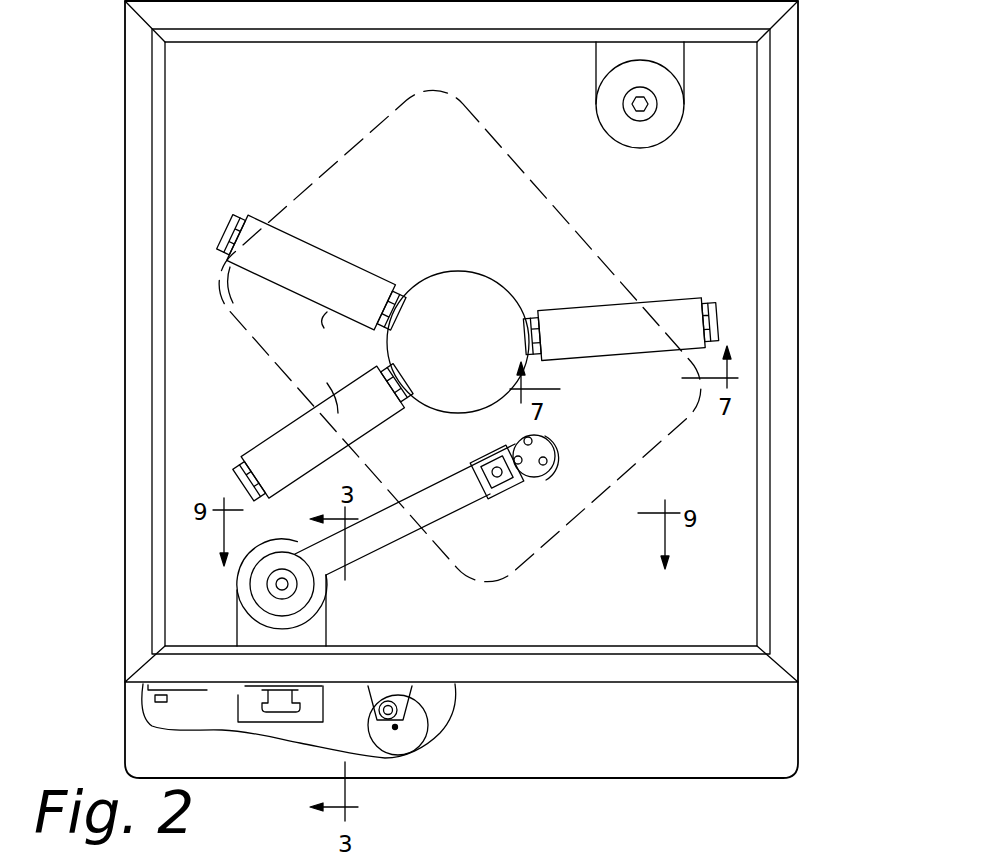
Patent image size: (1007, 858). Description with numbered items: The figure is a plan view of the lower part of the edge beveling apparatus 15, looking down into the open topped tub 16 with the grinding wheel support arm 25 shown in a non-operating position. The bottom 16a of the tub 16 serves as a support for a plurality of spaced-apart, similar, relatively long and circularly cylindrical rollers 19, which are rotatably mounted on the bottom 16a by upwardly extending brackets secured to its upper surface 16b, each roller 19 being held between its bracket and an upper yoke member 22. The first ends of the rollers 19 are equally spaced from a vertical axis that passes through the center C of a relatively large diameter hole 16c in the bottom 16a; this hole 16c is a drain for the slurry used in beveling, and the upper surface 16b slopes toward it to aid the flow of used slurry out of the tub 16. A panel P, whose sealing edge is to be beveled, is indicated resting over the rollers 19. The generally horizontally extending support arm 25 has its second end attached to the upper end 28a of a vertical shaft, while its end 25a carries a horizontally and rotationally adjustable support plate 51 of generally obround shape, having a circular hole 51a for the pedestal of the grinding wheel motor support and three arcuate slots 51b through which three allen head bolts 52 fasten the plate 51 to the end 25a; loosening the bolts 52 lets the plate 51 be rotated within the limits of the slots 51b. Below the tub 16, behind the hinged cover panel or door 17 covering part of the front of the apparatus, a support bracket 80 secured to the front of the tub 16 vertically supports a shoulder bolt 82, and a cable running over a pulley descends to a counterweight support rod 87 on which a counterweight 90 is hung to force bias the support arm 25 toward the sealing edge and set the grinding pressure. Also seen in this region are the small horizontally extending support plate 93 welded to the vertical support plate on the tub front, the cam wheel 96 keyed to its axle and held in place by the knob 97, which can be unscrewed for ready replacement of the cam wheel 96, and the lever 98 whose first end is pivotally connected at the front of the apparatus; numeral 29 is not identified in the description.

The edge beveling apparatus 15 is at (830, 106).
The open topped tub 16 is at (770, 258).
The bottom of tub 16a is at (730, 181).
The upper surface of support 16b is at (735, 217).
The hole 16c is at (445, 290).
The hinged cover panel or door 17 is at (632, 749).
The rollers 19 is at (333, 302).
The upper yoke member 22 is at (407, 382).
The support arm 25 is at (434, 496).
The end of support arm 25a is at (476, 497).
The upper end of shaft 28a is at (287, 588).
The bracket 29 is at (313, 630).
The support plate 51 is at (549, 439).
The circular hole 51a is at (512, 487).
The arcuate slots 51b is at (550, 463).
The allen head bolts 52 is at (516, 457).
The support bracket 80 is at (392, 693).
The shoulder bolt 82 is at (400, 712).
The counterweight support rod 87 is at (400, 728).
The counterweight 90 is at (397, 741).
The horizontally extending support plate 93 is at (315, 715).
The cam wheel 96 is at (308, 684).
The knob 97 is at (298, 708).
The lever 98 is at (205, 688).
The panel P is at (497, 138).
The center of hole C is at (460, 334).